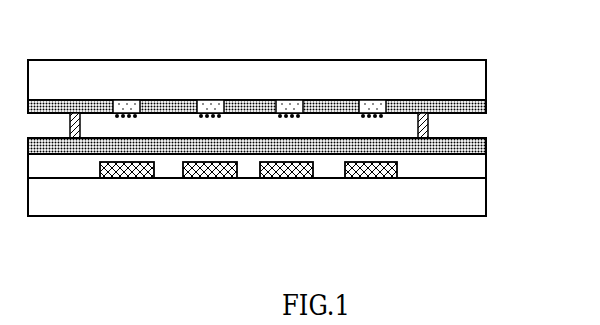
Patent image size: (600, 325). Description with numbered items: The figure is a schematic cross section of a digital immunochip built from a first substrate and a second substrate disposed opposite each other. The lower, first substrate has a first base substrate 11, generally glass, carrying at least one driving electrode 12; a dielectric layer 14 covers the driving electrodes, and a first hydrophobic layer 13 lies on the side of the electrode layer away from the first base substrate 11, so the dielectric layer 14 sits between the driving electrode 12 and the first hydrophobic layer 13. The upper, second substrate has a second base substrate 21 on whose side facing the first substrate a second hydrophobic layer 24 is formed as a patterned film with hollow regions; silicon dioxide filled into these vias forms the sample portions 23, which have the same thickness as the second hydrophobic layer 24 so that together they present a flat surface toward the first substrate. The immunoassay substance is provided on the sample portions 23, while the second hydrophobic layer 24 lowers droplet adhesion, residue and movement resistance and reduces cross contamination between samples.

The first base substrate 11 is at (440, 189).
The driving electrode 12 is at (368, 168).
The first hydrophobic layer 13 is at (447, 146).
The dielectric layer 14 is at (440, 165).
The second base substrate 21 is at (440, 83).
The sample portion 23 is at (286, 105).
The second hydrophobic layer 24 is at (440, 107).